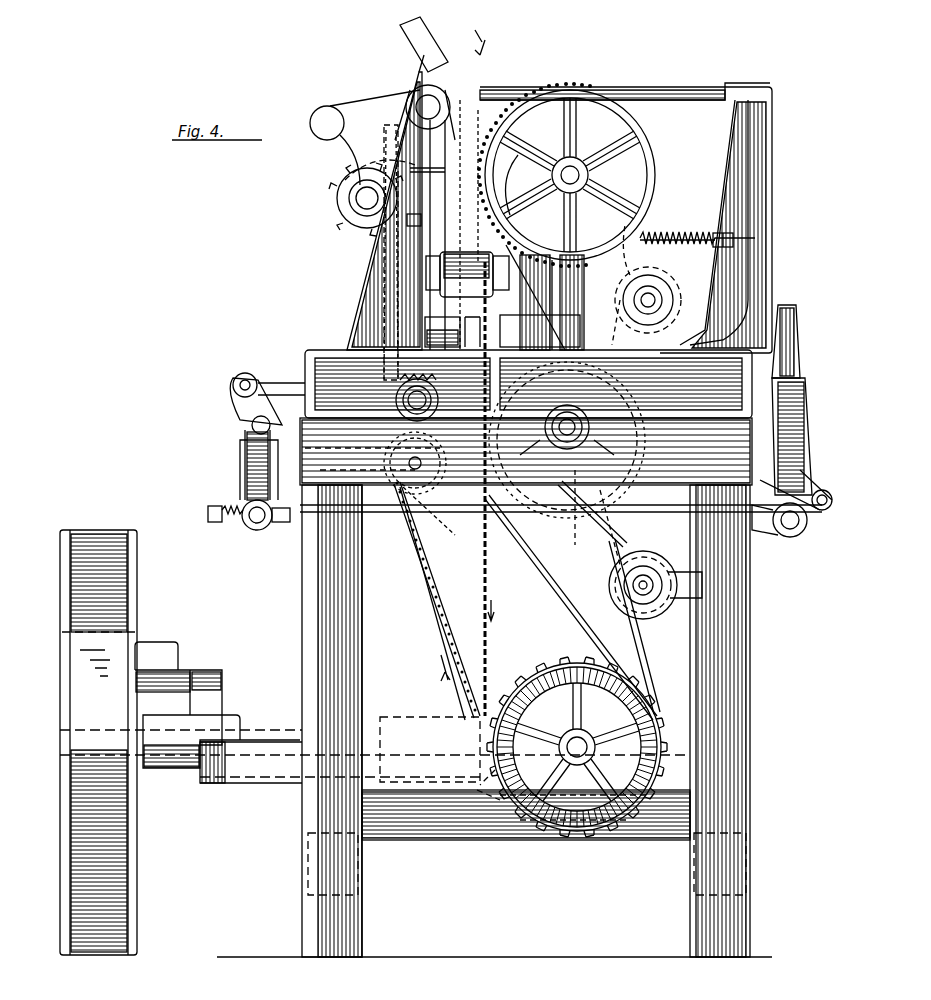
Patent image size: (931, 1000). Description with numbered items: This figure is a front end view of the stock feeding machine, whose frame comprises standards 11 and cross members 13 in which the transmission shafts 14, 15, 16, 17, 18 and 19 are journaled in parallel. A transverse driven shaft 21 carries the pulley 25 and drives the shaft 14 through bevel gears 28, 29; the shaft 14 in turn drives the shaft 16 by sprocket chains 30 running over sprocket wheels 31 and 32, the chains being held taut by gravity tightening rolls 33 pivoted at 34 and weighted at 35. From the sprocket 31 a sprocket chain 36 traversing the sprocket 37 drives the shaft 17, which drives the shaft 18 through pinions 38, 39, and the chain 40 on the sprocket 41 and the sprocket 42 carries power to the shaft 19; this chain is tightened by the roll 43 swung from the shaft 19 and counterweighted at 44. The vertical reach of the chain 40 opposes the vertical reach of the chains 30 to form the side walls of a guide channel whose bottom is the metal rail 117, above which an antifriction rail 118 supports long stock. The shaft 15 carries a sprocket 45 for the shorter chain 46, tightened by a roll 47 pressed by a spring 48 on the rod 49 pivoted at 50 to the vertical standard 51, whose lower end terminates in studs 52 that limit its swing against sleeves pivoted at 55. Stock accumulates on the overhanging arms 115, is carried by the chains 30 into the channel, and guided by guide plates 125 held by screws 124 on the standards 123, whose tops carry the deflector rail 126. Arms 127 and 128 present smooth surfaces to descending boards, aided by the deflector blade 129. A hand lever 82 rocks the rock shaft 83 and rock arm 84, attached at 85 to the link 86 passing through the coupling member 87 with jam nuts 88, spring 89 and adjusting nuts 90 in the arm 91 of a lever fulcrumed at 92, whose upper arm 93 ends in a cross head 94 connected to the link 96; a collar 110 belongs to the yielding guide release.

The standards 11 is at (320, 618).
The cross members 13 is at (430, 835).
The transmission shaft 14 is at (572, 742).
The transmission shaft 15 is at (560, 450).
The transmission shaft 16 is at (574, 172).
The transmission shaft 17 is at (455, 495).
The transmission shaft 18 is at (395, 345).
The transmission shaft 19 is at (452, 95).
The driven shaft 21 is at (268, 740).
The pulley 25 is at (137, 592).
The bevel gear 28 is at (490, 785).
The bevel gear 29 is at (515, 790).
The sprocket chains 30 is at (490, 640).
The sprocket wheels 31 is at (540, 665).
The sprocket wheels 32 is at (640, 130).
The gravity tightening rolls 33 is at (652, 562).
The pivot 34 is at (567, 459).
The weight 35 is at (674, 606).
The sprocket chain 36 is at (438, 625).
The sprocket 37 is at (420, 500).
The pinion 38 is at (408, 530).
The pinion 39 is at (412, 378).
The chain 40 is at (380, 295).
The sprocket 41 is at (365, 424).
The sprocket 42 is at (440, 92).
The tightener roll 43 is at (340, 215).
The counterweight 44 is at (325, 110).
The sprocket 45 is at (608, 322).
The chain 46 is at (615, 253).
The roll 47 is at (672, 300).
The spring 48 is at (690, 246).
The rod 49 is at (724, 238).
The pivot 50 is at (552, 221).
The vertical standard 51 is at (556, 284).
The studs 52 is at (608, 540).
The pivot 55 is at (634, 527).
The hand lever 82 is at (800, 353).
The rock shaft 83 is at (789, 538).
The rock arm 84 is at (815, 507).
The attachment point 85 is at (826, 490).
The link 86 is at (388, 510).
The coupling member 87 is at (258, 530).
The jam nuts 88 is at (283, 522).
The spring 89 is at (235, 520).
The adjusting nuts 90 is at (215, 522).
The lever arm 91 is at (247, 484).
The fulcrum 92 is at (252, 428).
The upper lever arm 93 is at (242, 402).
The cross head 94 is at (235, 378).
The link 96 is at (282, 386).
The collar 110 is at (765, 195).
The overhanging arms 115 is at (690, 90).
The metal rail 117 is at (420, 316).
The antifriction rail 118 is at (440, 282).
The standards 123 is at (370, 300).
The screws 124 is at (407, 222).
The guide plates 125 is at (420, 170).
The deflector rail 126 is at (440, 45).
The arm 127 is at (382, 252).
The arm 128 is at (540, 330).
The deflector blade 129 is at (521, 185).